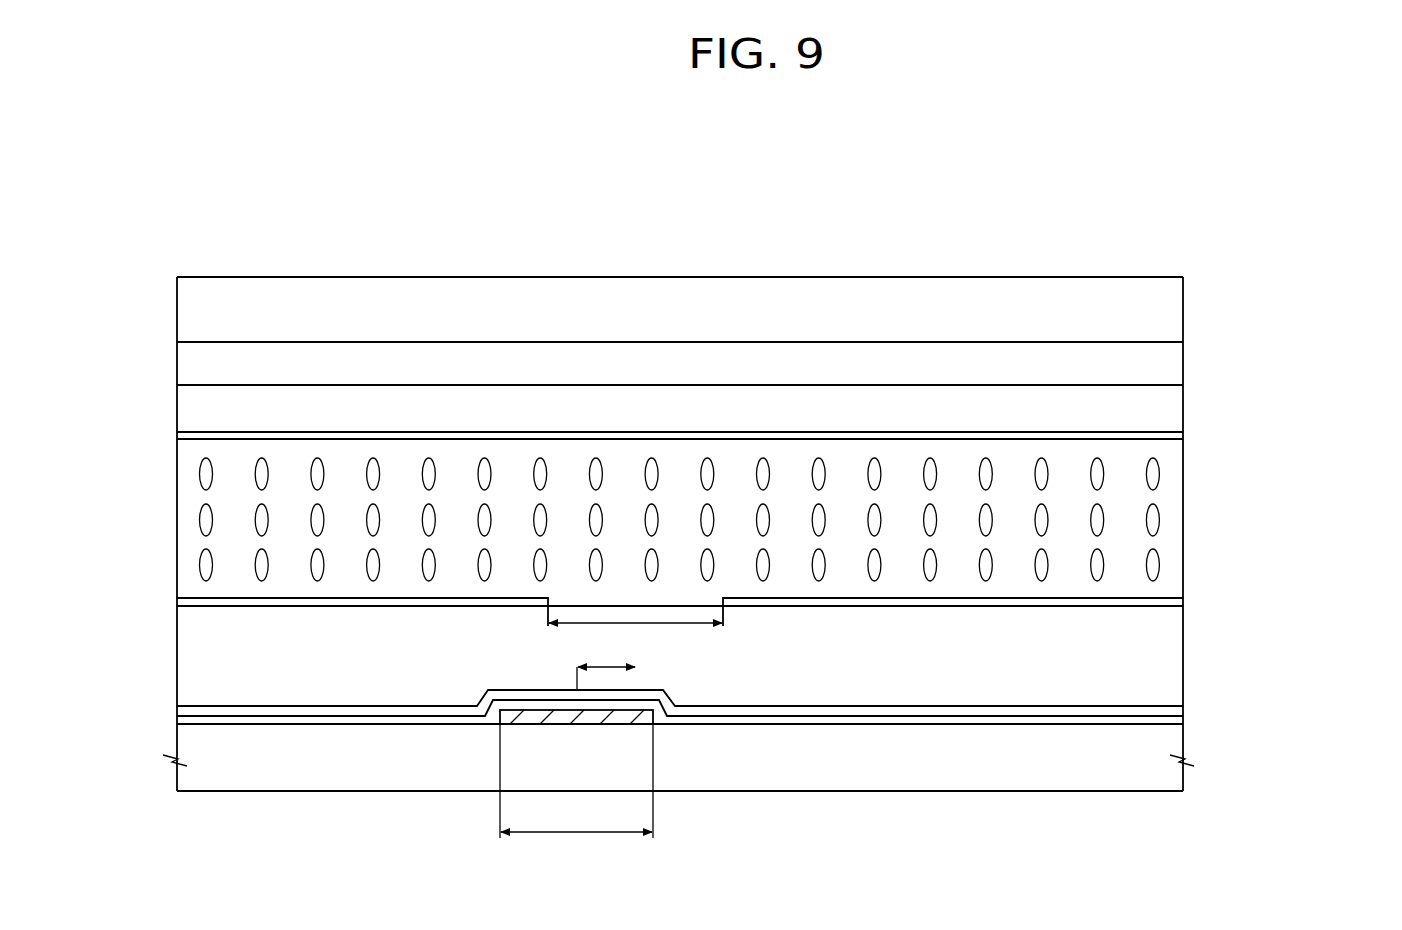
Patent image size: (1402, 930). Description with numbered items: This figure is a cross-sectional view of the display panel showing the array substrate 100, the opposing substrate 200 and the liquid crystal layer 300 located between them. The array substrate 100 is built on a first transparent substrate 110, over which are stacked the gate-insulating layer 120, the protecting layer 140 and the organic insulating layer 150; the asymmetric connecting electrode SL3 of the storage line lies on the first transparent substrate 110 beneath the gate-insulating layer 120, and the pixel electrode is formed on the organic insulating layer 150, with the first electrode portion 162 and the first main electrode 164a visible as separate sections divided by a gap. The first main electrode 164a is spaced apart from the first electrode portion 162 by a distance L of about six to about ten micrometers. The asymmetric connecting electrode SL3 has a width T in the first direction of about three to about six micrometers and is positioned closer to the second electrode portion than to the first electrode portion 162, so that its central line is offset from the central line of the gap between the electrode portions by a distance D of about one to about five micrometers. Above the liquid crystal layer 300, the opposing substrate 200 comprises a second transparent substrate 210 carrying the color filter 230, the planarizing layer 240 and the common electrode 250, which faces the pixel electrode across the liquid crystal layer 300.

The opposing substrate 200 is at (1287, 362).
The second transparent substrate 210 is at (1183, 316).
The color filter 230 is at (1183, 361).
The planarizing layer 240 is at (1183, 410).
The common electrode 250 is at (185, 433).
The liquid crystal layer 300 is at (1167, 520).
The first main electrode 164a is at (397, 606).
The first electrode portion 162 is at (925, 606).
The organic insulating layer 150 is at (1183, 663).
The protecting layer 140 is at (1183, 707).
The gate-insulating layer 120 is at (1183, 720).
The first transparent substrate 110 is at (1183, 765).
The array substrate 100 is at (1287, 692).
The asymmetric connecting electrode SL3 is at (651, 712).
The distance L is at (636, 672).
The distance D is at (606, 665).
The width T is at (576, 781).